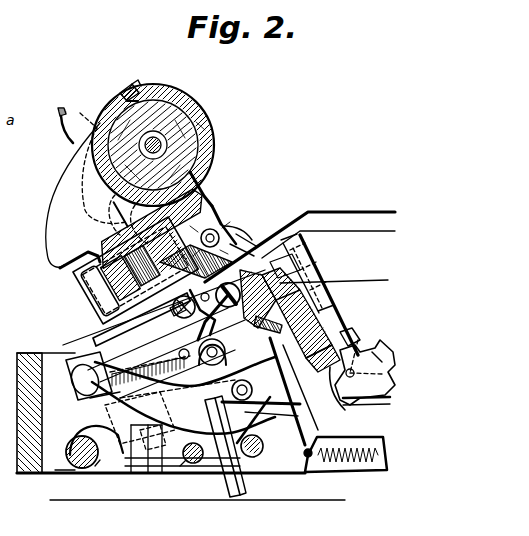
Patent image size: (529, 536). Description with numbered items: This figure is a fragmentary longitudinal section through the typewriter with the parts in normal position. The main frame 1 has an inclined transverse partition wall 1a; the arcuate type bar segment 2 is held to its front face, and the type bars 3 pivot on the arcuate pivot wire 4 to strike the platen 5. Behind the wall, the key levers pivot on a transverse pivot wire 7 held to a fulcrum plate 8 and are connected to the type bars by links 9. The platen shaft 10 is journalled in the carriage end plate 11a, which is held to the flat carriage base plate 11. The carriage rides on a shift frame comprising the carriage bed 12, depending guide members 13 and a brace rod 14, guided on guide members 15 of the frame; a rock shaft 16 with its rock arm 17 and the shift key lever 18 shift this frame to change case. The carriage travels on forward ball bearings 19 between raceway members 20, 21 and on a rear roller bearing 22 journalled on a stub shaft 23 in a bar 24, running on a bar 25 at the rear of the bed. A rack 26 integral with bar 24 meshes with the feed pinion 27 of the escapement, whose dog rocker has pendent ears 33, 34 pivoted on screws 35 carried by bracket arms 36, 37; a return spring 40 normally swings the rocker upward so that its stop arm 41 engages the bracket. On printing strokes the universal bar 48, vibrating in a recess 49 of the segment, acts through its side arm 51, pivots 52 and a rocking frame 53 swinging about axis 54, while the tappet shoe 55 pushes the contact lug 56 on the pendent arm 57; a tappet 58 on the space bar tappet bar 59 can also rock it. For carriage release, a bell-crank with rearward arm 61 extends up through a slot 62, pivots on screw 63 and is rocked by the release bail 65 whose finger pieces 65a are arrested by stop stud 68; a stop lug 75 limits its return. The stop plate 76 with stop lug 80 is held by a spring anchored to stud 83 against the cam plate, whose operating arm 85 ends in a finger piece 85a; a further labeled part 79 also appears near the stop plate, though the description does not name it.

The main frame 1 is at (32, 478).
The transverse partition wall 1a is at (338, 390).
The type bar segment 2 is at (280, 290).
The type bars 3 is at (375, 357).
The arcuate pivot wire 4 is at (358, 374).
The platen 5 is at (188, 118).
The pivot wire 7 is at (240, 306).
The fulcrum plate 8 is at (297, 313).
The links 9 is at (368, 440).
The platen shaft 10 is at (160, 135).
The carriage base plate 11 is at (82, 262).
The carriage end plate 11a is at (58, 193).
The carriage bed 12 is at (100, 336).
The guide members 13 is at (230, 485).
The brace rod 14 is at (193, 464).
The guide members 15 is at (215, 480).
The rock shaft 16 is at (68, 468).
The rock arm 17 is at (99, 468).
The shift key lever 18 is at (390, 252).
The forward ball bearings 19 is at (222, 216).
The raceway member 20 is at (242, 230).
The raceway member 21 is at (242, 238).
The rear roller bearing 22 is at (78, 288).
The stub shaft 23 is at (92, 296).
The bar 24 is at (76, 277).
The bar 25 is at (100, 305).
The rack 26 is at (112, 262).
The feed pinion 27 is at (128, 270).
The pendent ear 33 is at (86, 390).
The pendent ear 34 is at (92, 402).
The screws 35 is at (70, 380).
The bracket arm 36 is at (323, 358).
The bracket arm 37 is at (95, 372).
The return spring 40 is at (183, 401).
The stop arm 41 is at (102, 346).
The universal bar 48 is at (268, 275).
The recess 49 is at (343, 329).
The side arm 51 is at (68, 447).
The pivots 52 is at (215, 369).
The rocking frame 53 is at (282, 450).
The axis 54 is at (253, 457).
The tappet shoe 55 is at (148, 475).
The contact lug 56 is at (118, 466).
The pendent arm 57 is at (92, 415).
The tappet 58 is at (152, 470).
The tappet bar 59 is at (341, 439).
The rearwardly extending arm 61 is at (202, 312).
The slot 62 is at (199, 241).
The pivot screw 63 is at (238, 250).
The release bail 65 is at (140, 230).
The finger pieces 65a is at (58, 110).
The stop stud 68 is at (83, 112).
The stop lug 75 is at (290, 266).
The stop plate 76 is at (214, 184).
The link 79 is at (222, 198).
The stop lug 80 is at (230, 224).
The stud 83 is at (210, 127).
The operating arm 85 is at (121, 93).
The finger piece 85a is at (135, 83).